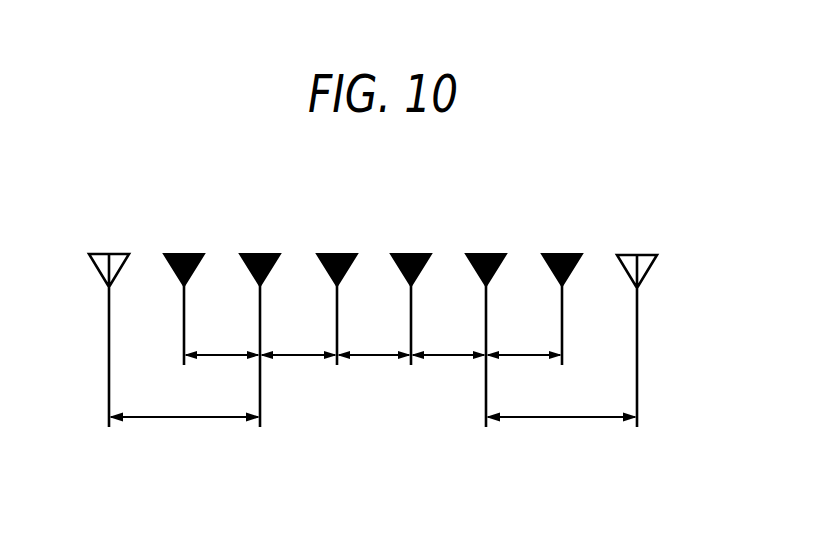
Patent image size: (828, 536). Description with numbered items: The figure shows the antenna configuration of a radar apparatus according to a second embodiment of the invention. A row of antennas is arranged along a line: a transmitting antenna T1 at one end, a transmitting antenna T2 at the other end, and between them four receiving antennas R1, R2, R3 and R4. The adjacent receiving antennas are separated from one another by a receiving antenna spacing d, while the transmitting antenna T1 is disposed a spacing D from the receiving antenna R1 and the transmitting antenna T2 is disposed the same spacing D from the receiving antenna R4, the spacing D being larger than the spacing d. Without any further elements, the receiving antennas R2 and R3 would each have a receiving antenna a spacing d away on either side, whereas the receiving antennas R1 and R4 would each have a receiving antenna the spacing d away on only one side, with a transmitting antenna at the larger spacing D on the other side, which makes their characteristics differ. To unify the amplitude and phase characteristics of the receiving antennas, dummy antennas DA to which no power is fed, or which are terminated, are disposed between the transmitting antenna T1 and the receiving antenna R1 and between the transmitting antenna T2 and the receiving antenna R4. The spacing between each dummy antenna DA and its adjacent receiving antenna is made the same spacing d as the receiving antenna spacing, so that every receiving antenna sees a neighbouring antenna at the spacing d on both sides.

The transmitting antenna T1 is at (101, 340).
The transmitting antenna T2 is at (647, 341).
The receiving antenna R1 is at (270, 340).
The receiving antenna R2 is at (347, 309).
The receiving antenna R3 is at (421, 309).
The receiving antenna R4 is at (496, 340).
The dummy antenna DA is at (562, 253).
The receiving antenna spacing d is at (373, 370).
The spacing between transmitting antenna and receiving antenna D is at (373, 431).